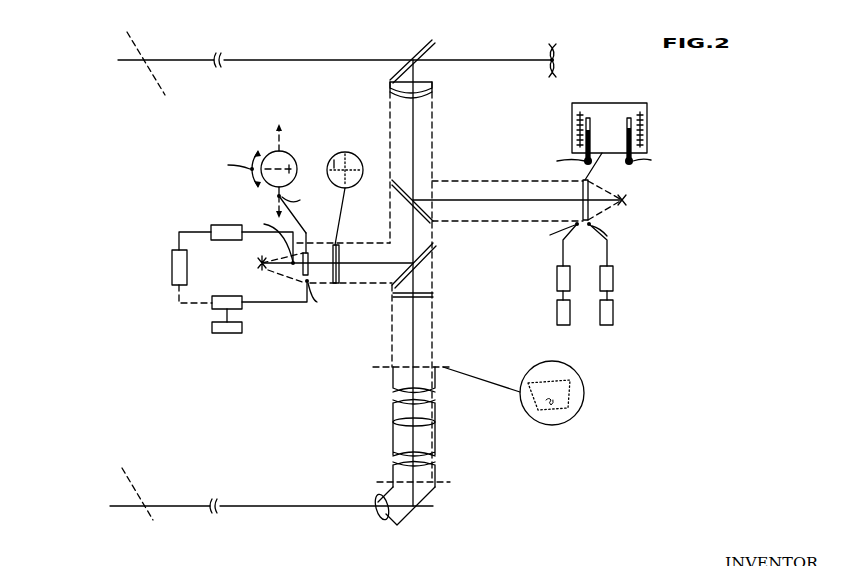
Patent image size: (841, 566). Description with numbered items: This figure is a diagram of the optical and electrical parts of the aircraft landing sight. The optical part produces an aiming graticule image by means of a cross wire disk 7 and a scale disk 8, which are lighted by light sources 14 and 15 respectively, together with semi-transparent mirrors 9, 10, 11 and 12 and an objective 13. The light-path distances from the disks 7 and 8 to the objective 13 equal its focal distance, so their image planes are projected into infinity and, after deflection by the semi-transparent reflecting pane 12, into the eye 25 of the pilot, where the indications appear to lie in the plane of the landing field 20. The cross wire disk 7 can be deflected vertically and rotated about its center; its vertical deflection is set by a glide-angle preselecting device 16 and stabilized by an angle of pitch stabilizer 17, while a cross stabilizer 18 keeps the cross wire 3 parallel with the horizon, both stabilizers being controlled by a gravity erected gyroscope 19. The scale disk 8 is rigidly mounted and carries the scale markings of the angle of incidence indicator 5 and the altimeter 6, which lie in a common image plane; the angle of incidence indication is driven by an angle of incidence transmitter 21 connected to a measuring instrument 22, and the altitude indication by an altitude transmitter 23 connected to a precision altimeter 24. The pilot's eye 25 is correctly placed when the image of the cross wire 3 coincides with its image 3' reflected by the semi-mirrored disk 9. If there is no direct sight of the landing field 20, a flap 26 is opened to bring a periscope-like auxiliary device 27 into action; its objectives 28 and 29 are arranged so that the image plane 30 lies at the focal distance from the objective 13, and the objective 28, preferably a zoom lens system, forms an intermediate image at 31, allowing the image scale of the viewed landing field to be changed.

The cross wire 3 is at (265, 186).
The image of the cross wire 3' is at (345, 182).
The angle of incidence indicator 5 is at (641, 140).
The altimeter 6 is at (580, 140).
The cross wire disk 7 is at (303, 268).
The scale disk 8 is at (589, 210).
The semi-transparent mirror 9 is at (337, 257).
The semi-transparent mirror 10 is at (417, 266).
The semi-transparent mirror 11 is at (420, 183).
The semi-transparent reflecting pane 12 is at (430, 47).
The objective 13 is at (420, 90).
The light source 14 is at (258, 264).
The light source 15 is at (627, 199).
The glide-angle preselecting device 16 is at (227, 333).
The angle of pitch stabilizer 17 is at (215, 305).
The cross stabilizer 18 is at (227, 225).
The gravity erected gyroscope 19 is at (173, 262).
The landing field 20 is at (131, 485).
The angle of incidence transmitter 21 is at (613, 280).
The measuring instrument 22 is at (613, 323).
The altitude transmitter 23 is at (557, 280).
The precision altimeter 24 is at (560, 313).
The eye of the pilot 25 is at (556, 50).
The flap 26 is at (420, 302).
The periscope-like auxiliary device 27 is at (397, 440).
The objective 28 is at (375, 515).
The objective 29 is at (435, 425).
The image plane 30 is at (413, 367).
The intermediate image 31 is at (440, 487).